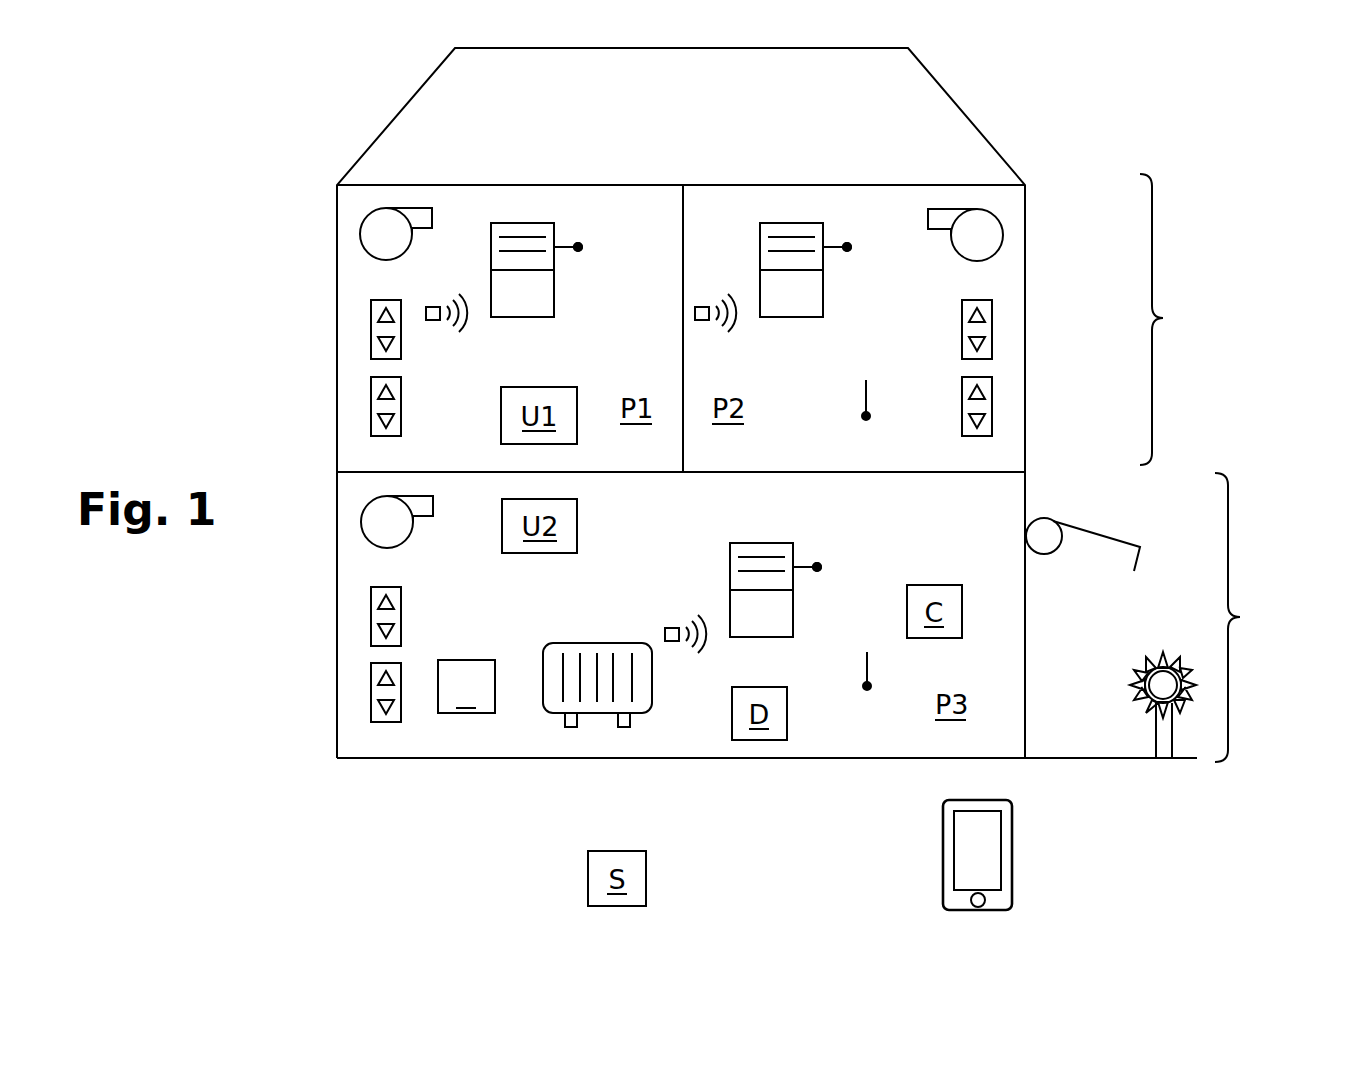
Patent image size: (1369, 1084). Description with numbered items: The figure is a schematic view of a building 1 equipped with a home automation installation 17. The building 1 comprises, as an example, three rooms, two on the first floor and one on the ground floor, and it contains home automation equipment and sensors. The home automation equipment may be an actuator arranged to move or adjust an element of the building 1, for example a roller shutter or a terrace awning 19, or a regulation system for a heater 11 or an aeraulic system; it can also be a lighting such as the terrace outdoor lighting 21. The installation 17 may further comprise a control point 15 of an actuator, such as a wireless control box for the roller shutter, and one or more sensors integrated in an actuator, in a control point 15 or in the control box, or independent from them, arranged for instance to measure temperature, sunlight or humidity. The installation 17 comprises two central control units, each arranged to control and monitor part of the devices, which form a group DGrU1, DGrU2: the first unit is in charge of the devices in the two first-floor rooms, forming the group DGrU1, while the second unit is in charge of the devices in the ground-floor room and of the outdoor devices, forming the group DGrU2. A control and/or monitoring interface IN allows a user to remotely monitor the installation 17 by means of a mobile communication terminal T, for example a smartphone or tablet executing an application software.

The building 1 is at (968, 114).
The home automation installation 17 is at (1088, 104).
The heater 11 is at (598, 643).
The control point 15 is at (469, 651).
The terrace awning 19 is at (1083, 566).
The terrace outdoor lighting 21 is at (1159, 734).
The mobile communication terminal T is at (987, 924).
The control and/or monitoring interface IN is at (965, 862).
The device group DGrU1 is at (1199, 319).
The device group DGrU2 is at (1275, 617).